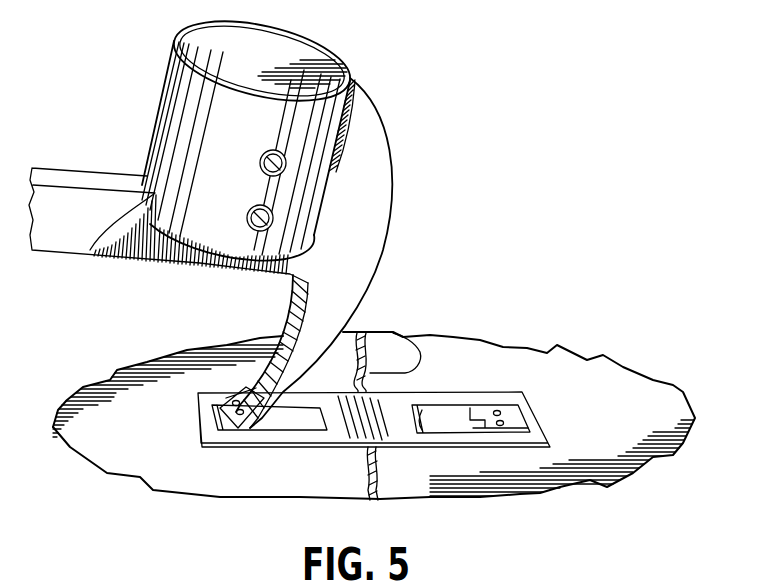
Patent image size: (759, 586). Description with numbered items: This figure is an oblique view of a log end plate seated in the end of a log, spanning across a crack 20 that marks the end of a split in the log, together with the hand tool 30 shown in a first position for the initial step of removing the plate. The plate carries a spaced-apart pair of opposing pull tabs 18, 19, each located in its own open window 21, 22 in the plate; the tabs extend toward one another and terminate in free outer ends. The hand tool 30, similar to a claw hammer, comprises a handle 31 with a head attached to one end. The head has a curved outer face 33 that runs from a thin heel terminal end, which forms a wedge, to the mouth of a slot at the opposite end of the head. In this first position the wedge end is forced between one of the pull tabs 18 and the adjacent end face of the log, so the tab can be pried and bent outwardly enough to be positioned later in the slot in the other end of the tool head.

The pull tab 18 is at (243, 390).
The pull tab 19 is at (488, 413).
The crack 20 is at (423, 345).
The open window 21 is at (282, 420).
The open window 22 is at (450, 424).
The hand tool 30 is at (389, 127).
The handle 31 is at (97, 181).
The curved outer face 33 is at (390, 193).